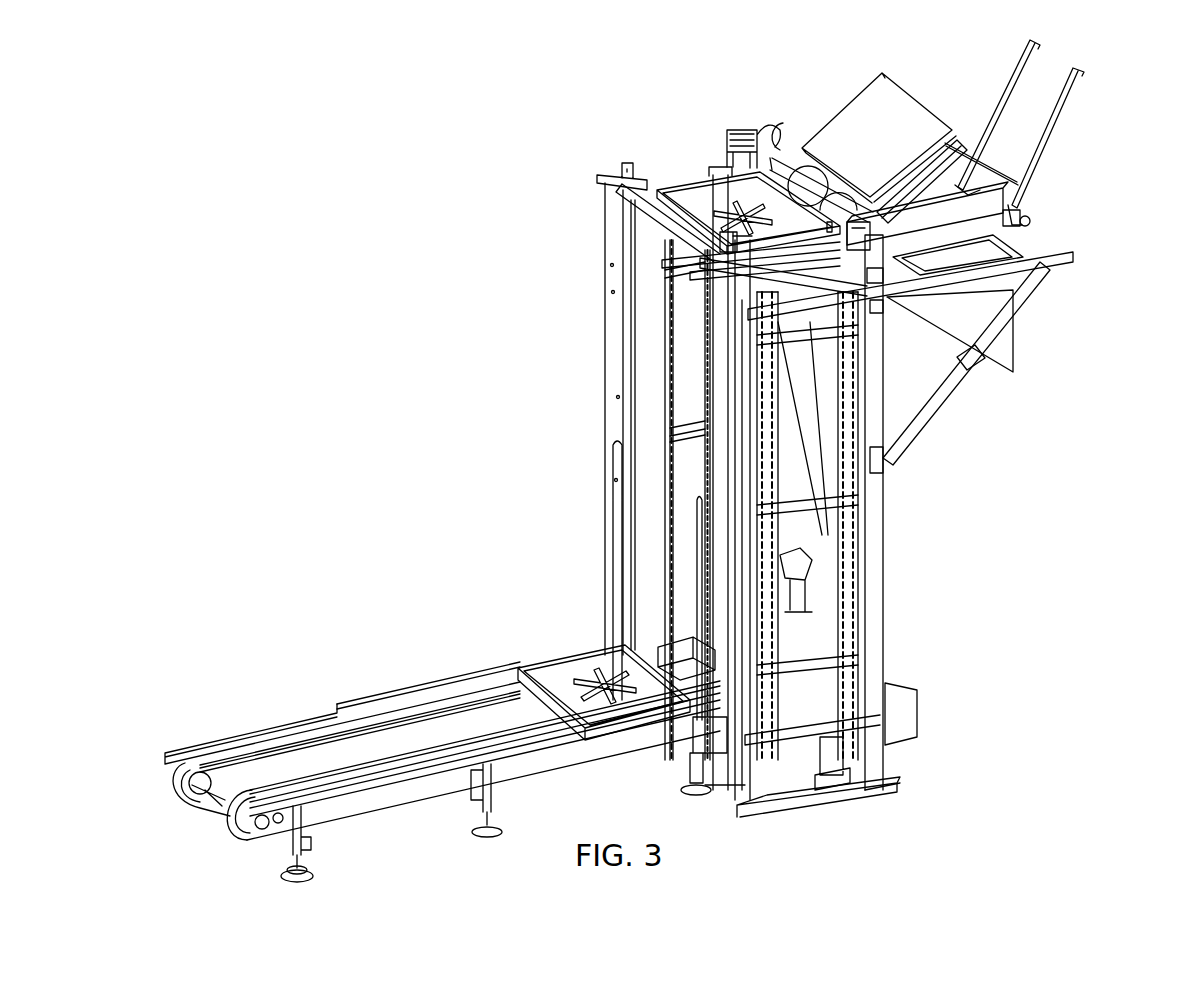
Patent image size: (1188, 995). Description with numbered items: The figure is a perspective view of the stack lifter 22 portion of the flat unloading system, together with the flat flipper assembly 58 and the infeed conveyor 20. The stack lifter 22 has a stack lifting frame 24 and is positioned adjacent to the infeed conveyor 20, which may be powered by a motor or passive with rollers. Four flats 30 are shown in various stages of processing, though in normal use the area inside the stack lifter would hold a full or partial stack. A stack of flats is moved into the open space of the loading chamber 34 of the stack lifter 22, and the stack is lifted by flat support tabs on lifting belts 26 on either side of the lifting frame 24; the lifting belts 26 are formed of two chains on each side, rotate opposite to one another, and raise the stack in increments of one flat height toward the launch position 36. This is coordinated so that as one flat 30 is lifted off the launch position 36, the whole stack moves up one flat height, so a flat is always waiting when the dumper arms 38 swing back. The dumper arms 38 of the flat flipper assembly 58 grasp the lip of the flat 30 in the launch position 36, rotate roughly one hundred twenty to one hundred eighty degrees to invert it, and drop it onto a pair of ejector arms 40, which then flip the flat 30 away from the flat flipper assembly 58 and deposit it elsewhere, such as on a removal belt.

The infeed conveyor 20 is at (280, 728).
The stack lifter 22 is at (805, 470).
The stack lifting frame 24 is at (877, 553).
The lifting belts 26 is at (665, 327).
The flats 30 is at (699, 395).
The loading chamber 34 is at (677, 643).
The launch position 36 is at (683, 183).
The dumper arms 38 is at (927, 143).
The ejector arms 40 is at (1040, 48).
The flat flipper assembly 58 is at (1037, 207).